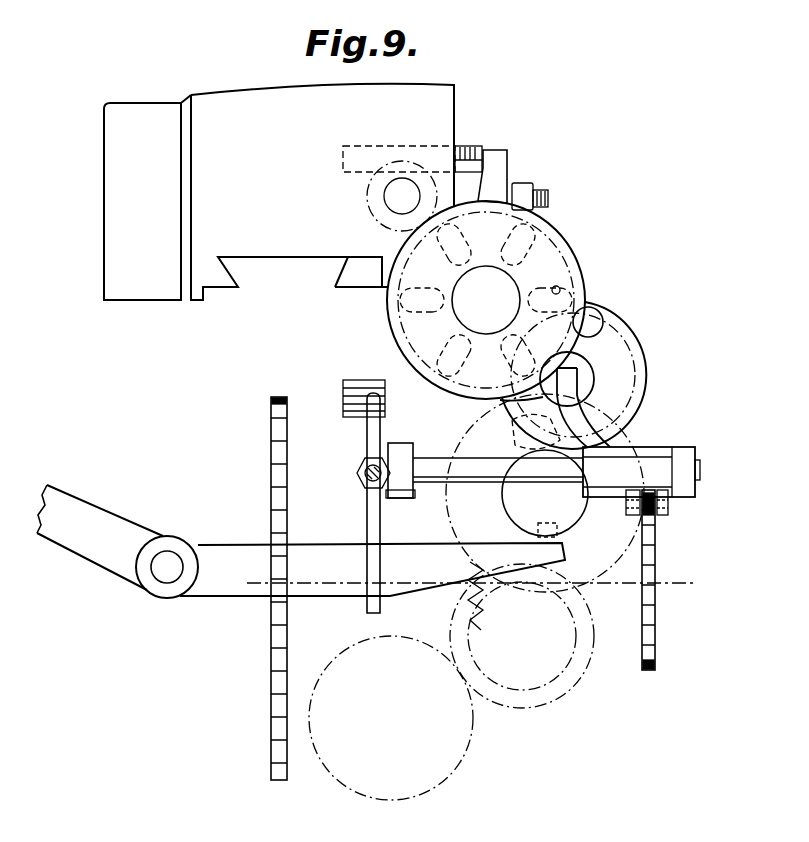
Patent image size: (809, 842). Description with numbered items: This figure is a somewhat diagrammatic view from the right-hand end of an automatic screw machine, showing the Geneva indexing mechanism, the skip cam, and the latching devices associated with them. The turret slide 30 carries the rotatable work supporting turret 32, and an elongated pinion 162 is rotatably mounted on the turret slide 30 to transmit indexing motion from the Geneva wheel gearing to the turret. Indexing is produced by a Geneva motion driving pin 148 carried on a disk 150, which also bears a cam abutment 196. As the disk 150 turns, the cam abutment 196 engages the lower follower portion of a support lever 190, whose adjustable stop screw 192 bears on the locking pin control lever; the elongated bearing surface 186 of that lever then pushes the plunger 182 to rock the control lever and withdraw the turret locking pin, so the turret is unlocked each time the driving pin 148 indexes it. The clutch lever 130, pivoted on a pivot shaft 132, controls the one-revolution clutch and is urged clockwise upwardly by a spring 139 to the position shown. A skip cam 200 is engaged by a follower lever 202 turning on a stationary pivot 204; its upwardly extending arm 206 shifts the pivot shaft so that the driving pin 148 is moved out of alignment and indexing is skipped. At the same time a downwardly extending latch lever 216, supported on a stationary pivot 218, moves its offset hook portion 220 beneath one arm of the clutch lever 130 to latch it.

The turret slide 30 is at (248, 228).
The work supporting turret 32 is at (120, 232).
The clutch lever 130 is at (437, 573).
The pivot shaft 132 is at (150, 577).
The spring 139 is at (478, 634).
The Geneva motion driving pin 148 is at (596, 318).
The disk 150 is at (645, 353).
The elongated pinion 162 is at (362, 195).
The plunger 182 is at (362, 148).
The elongated bearing surface 186 is at (499, 158).
The support lever 190 is at (522, 231).
The adjustable stop screw 192 is at (546, 197).
The cam abutment 196 is at (562, 288).
The skip cam 200 is at (654, 566).
The follower lever 202 is at (668, 509).
The stationary pivot 204 is at (441, 468).
The upwardly extending arm 206 is at (608, 398).
The latch lever 216 is at (379, 527).
The stationary pivot 218 is at (355, 392).
The offset hook portion 220 is at (368, 602).